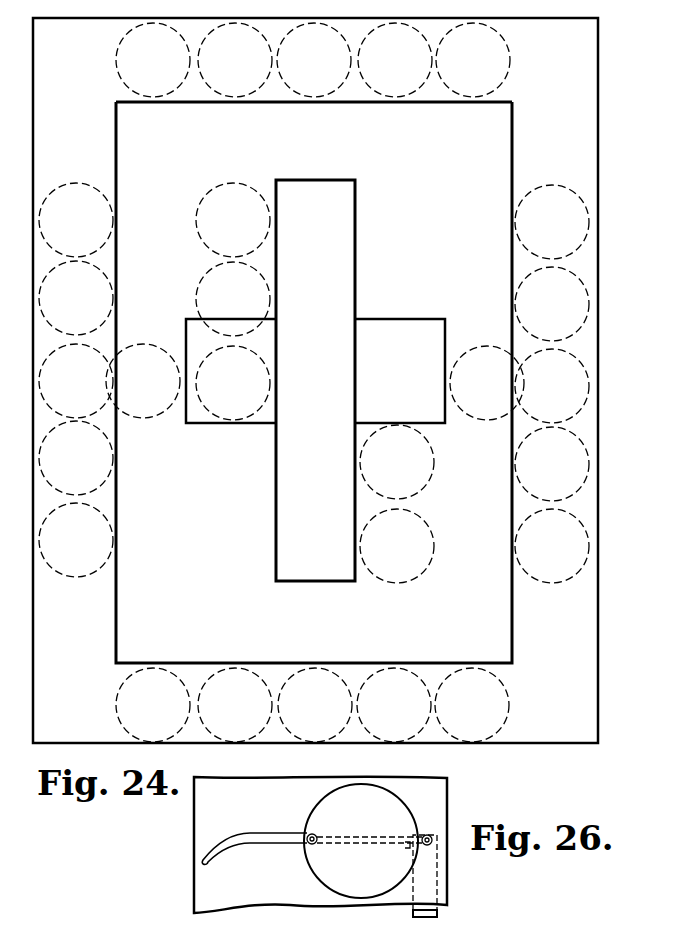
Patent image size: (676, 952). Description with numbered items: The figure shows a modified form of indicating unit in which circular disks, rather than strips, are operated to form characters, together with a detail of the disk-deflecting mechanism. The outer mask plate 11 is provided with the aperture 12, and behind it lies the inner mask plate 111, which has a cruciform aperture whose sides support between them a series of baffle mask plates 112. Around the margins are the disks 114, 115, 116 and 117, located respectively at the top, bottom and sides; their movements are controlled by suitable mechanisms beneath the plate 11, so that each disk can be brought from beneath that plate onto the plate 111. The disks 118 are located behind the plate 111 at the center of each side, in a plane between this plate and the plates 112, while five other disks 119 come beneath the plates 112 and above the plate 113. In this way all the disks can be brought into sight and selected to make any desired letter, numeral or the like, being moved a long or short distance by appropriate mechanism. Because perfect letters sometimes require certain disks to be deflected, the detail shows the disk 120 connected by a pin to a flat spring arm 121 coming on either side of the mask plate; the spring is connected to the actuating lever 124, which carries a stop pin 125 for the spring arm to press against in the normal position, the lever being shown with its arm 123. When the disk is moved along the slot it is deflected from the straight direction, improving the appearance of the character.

In FIG. 24, the outer mask plate 11 is at (572, 642).
In FIG. 24, the aperture 12 is at (498, 598).
In FIG. 24, the inner mask plate 111 is at (480, 137).
In FIG. 24, the baffle mask plates 112 is at (193, 320).
In FIG. 24, the plate 113 is at (342, 207).
In FIG. 24, the disks 114 is at (160, 97).
In FIG. 24, the disks 115 is at (189, 647).
In FIG. 24, the disks 116 is at (102, 519).
In FIG. 24, the disks 117 is at (583, 239).
In FIG. 24, the disks 118 is at (134, 420).
In FIG. 24, the disks 119 is at (202, 228).
In FIG. 26, the disk 120 is at (375, 800).
In FIG. 26, the spring arm 121 is at (345, 843).
In FIG. 26, the lever arm 123 is at (250, 838).
In FIG. 26, the actuating lever 124 is at (440, 915).
In FIG. 26, the stop pin 125 is at (408, 846).